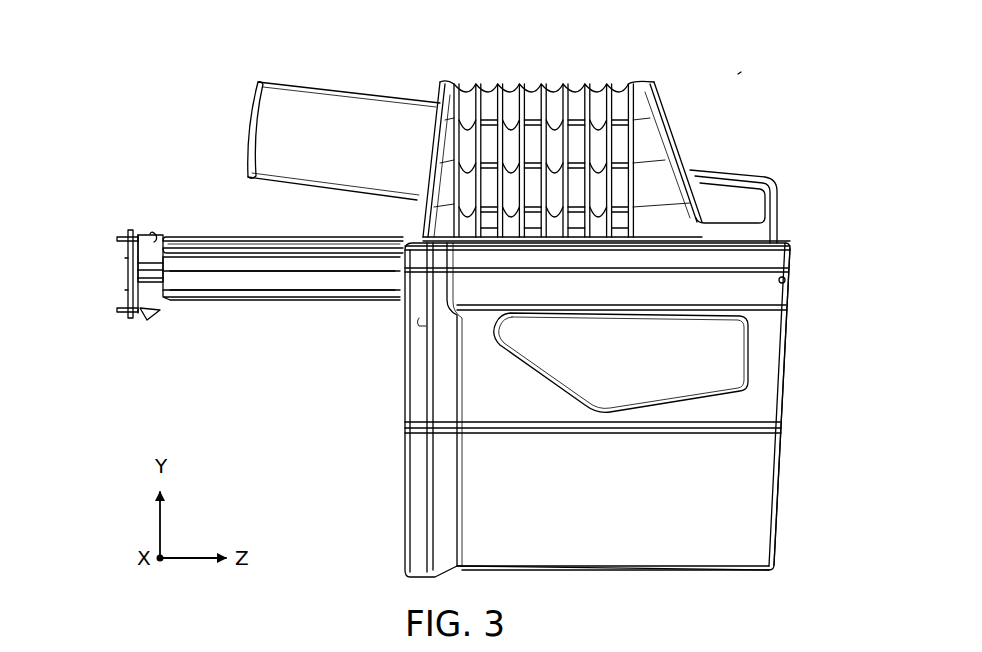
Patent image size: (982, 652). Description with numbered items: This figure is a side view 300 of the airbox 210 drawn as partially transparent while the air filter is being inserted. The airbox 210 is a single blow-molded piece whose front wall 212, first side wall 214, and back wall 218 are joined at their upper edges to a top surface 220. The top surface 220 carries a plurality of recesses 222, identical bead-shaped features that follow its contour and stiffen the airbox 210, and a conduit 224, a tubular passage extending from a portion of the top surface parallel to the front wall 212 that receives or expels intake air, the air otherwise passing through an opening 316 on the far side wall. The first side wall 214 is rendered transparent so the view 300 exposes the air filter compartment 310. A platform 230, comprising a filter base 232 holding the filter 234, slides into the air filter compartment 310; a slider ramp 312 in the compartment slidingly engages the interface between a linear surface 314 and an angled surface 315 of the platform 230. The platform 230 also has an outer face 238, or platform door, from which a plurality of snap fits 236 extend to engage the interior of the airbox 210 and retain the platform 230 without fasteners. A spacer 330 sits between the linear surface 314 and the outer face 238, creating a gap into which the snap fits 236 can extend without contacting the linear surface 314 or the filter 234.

The view 300 is at (742, 70).
The airbox 210 is at (670, 72).
The plurality of recesses 222 is at (450, 82).
The top surface 220 is at (693, 163).
The front wall 212 is at (405, 425).
The first side wall 214 is at (580, 570).
The back wall 218 is at (781, 414).
The slider ramp 312 is at (770, 268).
The air filter compartment 310 is at (780, 282).
The opening 316 is at (540, 385).
The conduit 224 is at (262, 85).
The platform 230 is at (130, 359).
The filter 234 is at (205, 238).
The filter base 232 is at (298, 238).
The linear surface 314 is at (276, 270).
The angled surface 315 is at (354, 300).
The plurality of snap fits 236 is at (150, 235).
The platform outer face 238 is at (127, 263).
The spacer 330 is at (157, 284).